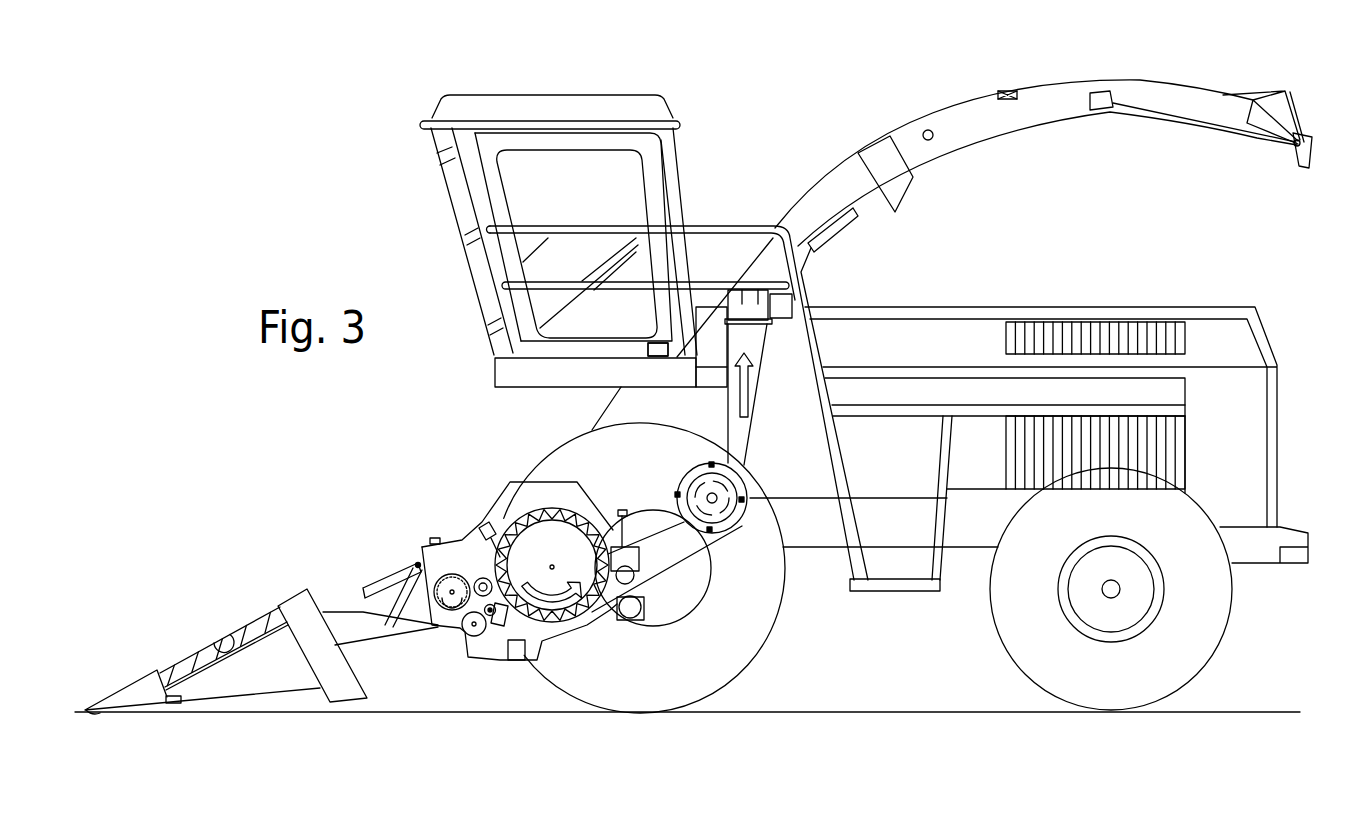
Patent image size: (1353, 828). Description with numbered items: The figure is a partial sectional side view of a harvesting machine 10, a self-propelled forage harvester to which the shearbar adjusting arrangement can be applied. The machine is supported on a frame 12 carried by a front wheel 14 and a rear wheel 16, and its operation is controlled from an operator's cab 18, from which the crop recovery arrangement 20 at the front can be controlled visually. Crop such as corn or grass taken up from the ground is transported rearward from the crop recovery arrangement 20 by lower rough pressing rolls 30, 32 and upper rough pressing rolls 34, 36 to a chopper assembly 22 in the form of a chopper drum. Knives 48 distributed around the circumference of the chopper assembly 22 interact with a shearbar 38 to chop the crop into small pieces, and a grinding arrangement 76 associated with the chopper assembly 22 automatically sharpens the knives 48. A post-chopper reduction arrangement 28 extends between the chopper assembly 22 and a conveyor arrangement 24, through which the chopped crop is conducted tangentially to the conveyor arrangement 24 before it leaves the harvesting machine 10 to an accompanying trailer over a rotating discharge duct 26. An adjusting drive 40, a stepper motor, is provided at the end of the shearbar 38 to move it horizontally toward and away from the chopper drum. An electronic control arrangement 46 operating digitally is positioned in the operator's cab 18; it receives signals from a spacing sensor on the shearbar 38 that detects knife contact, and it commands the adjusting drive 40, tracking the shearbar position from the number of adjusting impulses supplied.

The harvesting machine 10 is at (312, 120).
The frame 12 is at (977, 533).
The front wheel 14 is at (633, 690).
The rear wheel 16 is at (1197, 657).
The operator's cab 18 is at (543, 162).
The crop recovery arrangement 20 is at (343, 620).
The chopper assembly 22 is at (565, 537).
The conveyor arrangement 24 is at (714, 502).
The discharge duct 26 is at (847, 175).
The post-chopper reduction arrangement 28 is at (627, 627).
The lower rough pressing roll 30 is at (467, 632).
The lower rough pressing roll 32 is at (488, 617).
The upper rough pressing roll 34 is at (458, 540).
The upper rough pressing roll 36 is at (452, 573).
The shearbar 38 is at (498, 655).
The first adjusting drive 40 is at (494, 628).
The electronic control arrangement 46 is at (665, 340).
The knives 48 is at (587, 527).
The grinding arrangement 76 is at (482, 578).